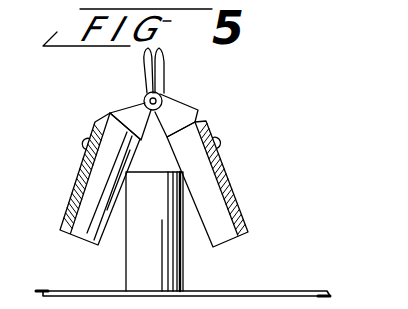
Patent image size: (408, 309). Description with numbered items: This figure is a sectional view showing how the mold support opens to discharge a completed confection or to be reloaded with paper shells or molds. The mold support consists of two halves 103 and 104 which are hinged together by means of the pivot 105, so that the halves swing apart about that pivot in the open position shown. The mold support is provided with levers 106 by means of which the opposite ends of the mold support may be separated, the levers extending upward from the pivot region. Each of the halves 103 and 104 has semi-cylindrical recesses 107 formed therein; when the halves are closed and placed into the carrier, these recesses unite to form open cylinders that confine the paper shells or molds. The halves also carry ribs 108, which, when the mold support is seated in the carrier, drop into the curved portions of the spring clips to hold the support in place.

The mold support half 103 is at (227, 173).
The mold support half 104 is at (80, 182).
The pivot 105 is at (163, 92).
The levers 106 is at (162, 63).
The semi-cylindrical recesses 107 is at (93, 213).
The ribs 108 is at (84, 143).